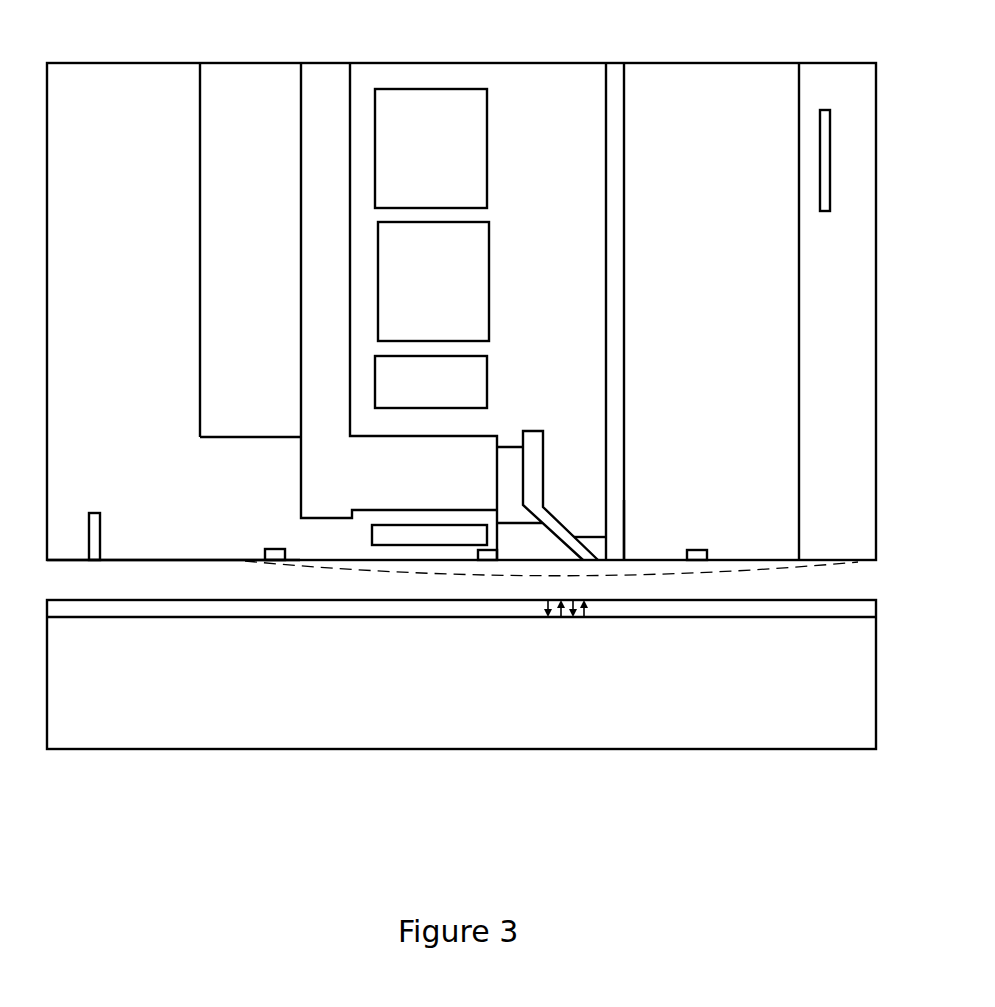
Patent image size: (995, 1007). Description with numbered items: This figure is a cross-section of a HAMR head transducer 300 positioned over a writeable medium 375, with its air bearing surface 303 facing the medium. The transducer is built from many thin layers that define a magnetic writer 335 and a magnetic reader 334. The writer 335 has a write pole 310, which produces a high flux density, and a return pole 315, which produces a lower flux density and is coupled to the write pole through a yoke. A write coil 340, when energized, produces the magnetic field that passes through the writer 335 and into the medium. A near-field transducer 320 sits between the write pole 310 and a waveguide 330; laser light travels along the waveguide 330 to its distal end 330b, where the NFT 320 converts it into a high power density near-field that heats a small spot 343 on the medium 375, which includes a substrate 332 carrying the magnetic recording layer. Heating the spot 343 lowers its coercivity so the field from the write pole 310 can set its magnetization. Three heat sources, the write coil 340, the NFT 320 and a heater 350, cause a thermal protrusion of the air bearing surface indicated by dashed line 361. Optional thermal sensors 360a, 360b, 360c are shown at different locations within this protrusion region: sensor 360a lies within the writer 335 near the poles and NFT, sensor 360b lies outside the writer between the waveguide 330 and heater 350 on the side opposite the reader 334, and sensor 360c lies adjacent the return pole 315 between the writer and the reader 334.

The head transducer 300 is at (748, 62).
The air bearing surface 303 is at (58, 561).
The write pole 310 is at (532, 440).
The return pole 315 is at (301, 449).
The near-field transducer 320 is at (592, 536).
The waveguide 330 is at (625, 440).
The distal end of the waveguide 330b is at (625, 537).
The substrate 332 is at (480, 695).
The reader 334 is at (100, 523).
The writer 335 is at (168, 181).
The write coil 340 is at (481, 284).
The spot 343 is at (586, 602).
The heater 350 is at (825, 211).
The thermal sensor 360a is at (486, 551).
The thermal sensor 360b is at (695, 550).
The thermal sensor 360c is at (277, 549).
The thermal protrusion 361 is at (787, 572).
The writeable medium 375 is at (250, 811).